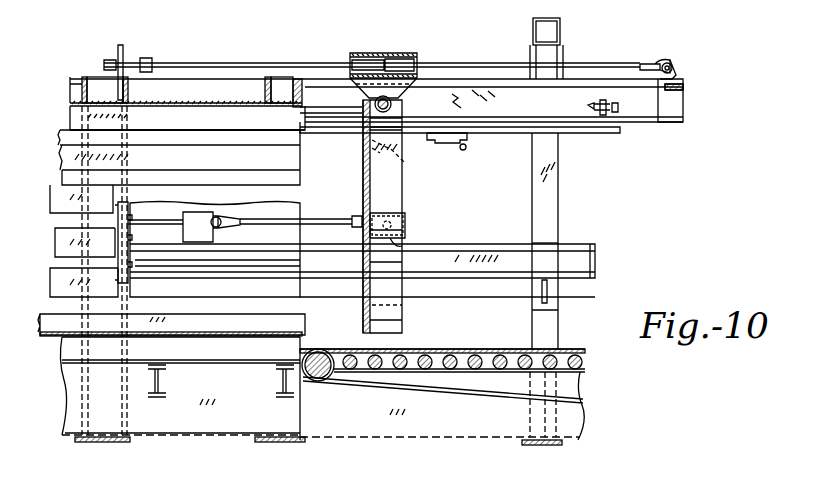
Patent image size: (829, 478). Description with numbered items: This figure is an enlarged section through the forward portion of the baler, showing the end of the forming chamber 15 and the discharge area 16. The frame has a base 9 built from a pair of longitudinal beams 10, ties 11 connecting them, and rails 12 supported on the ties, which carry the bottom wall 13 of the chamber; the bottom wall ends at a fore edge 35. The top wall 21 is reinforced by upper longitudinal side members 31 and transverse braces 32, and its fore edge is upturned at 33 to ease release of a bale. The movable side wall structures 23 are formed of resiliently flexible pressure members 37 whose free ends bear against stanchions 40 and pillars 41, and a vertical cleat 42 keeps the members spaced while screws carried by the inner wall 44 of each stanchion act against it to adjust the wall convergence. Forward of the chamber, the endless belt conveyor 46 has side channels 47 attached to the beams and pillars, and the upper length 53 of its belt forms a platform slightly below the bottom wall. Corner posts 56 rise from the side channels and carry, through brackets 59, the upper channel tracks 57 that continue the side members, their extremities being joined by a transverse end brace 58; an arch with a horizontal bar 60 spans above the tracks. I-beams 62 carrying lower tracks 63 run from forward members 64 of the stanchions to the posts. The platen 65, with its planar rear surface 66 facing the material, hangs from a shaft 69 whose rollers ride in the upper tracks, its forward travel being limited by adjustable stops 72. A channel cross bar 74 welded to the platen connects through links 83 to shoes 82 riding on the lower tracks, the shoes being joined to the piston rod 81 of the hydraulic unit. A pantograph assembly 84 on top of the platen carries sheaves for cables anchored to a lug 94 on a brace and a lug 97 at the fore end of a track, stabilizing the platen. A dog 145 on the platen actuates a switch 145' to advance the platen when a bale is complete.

The base 9 is at (62, 398).
The longitudinal beams 10 is at (198, 425).
The ties 11 is at (158, 381).
The rails 12 is at (65, 352).
The bottom wall 13 is at (42, 322).
The forming chamber 15 is at (200, 135).
The discharge area 16 is at (556, 196).
The top wall 21 is at (72, 98).
The side wall structures 23 is at (219, 137).
The upper longitudinal side members 31 is at (70, 85).
The transverse braces 32 is at (82, 80).
The upturned fore edge 33 is at (307, 108).
The fore edge of bottom wall 35 is at (305, 338).
The pressure members 37 is at (60, 186).
The stanchions 40 is at (97, 77).
The pillars 41 is at (270, 77).
The vertical cleat 42 is at (95, 224).
The inner wall of stanchion 44 is at (95, 420).
The endless belt conveyor 46 is at (571, 347).
The side channels 47 is at (570, 425).
The upper length of belt 53 is at (478, 349).
The corner posts 56 is at (558, 158).
The upper channel tracks 57 is at (455, 102).
The transverse end brace 58 is at (683, 86).
The brackets 59 is at (530, 55).
The horizontal bar 60 is at (560, 28).
The I-beams 62 is at (590, 262).
The lower tracks 63 is at (590, 244).
The forward members of stanchions 64 is at (80, 134).
The platen 65 is at (358, 194).
The rear surface of platen 66 is at (363, 162).
The shaft 69 is at (392, 104).
The adjustable stops 72 is at (594, 108).
The channel cross bar 74 is at (406, 241).
The piston rod 81 is at (152, 226).
The shoes 82 is at (200, 240).
The links 83 is at (316, 222).
The pantograph assembly 84 is at (402, 50).
The lug 94 is at (122, 52).
The lug 97 is at (677, 73).
The dog 145 is at (403, 222).
The switch 145' is at (471, 145).